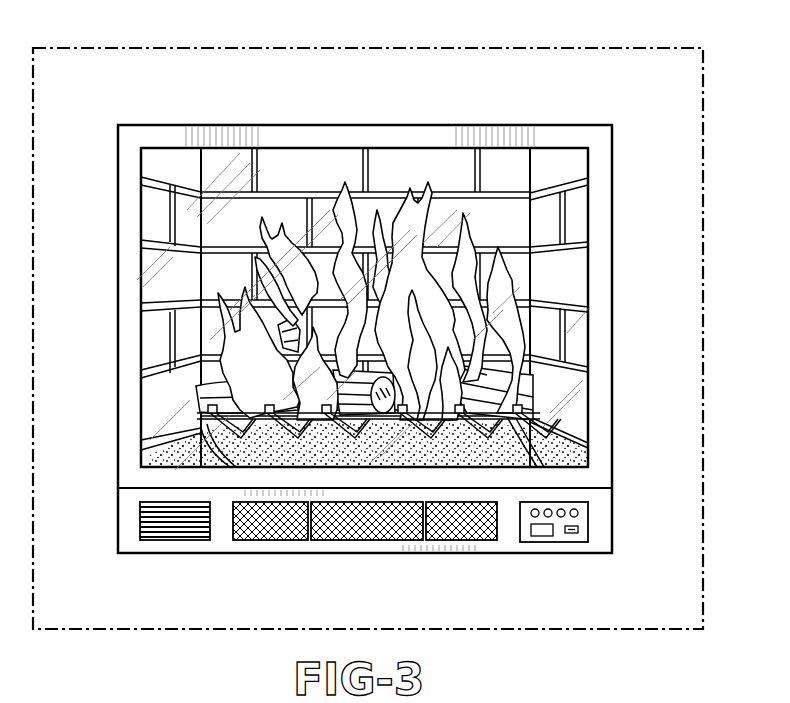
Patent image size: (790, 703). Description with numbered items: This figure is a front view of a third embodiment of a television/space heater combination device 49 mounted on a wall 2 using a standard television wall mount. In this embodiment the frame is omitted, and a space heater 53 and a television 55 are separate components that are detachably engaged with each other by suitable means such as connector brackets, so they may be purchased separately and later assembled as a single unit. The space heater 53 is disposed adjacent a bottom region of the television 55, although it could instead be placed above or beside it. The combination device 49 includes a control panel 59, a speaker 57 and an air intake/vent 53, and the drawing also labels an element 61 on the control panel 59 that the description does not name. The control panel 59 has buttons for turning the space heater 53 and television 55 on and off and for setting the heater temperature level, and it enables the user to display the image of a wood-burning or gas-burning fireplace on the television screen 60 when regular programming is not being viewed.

The wall 2 is at (212, 77).
The television/space heater combination device 49 is at (288, 562).
The space heater 53 is at (358, 550).
The television 55 is at (401, 339).
The speaker 57 is at (175, 528).
The control panel 59 is at (596, 513).
The television screen 60 is at (518, 232).
The control button 61 is at (568, 534).